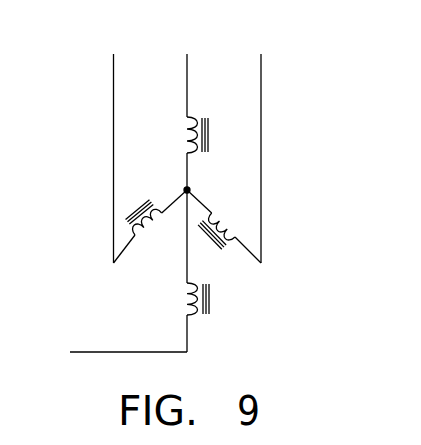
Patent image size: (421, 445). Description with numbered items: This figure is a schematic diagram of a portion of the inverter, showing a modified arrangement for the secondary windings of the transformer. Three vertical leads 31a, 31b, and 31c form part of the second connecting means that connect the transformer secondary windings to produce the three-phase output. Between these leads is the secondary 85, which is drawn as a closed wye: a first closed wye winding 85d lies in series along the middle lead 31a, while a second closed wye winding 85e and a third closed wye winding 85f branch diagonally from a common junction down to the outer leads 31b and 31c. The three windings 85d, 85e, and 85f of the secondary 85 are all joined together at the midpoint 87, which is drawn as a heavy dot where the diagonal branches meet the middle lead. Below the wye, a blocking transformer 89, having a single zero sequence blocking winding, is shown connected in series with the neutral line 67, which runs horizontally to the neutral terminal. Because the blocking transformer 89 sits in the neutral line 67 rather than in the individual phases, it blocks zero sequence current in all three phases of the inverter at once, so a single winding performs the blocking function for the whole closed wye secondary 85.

The lead 31a is at (187, 65).
The lead 31b is at (261, 90).
The lead 31c is at (113, 81).
The secondary 85 is at (155, 191).
The closed wye winding 85d is at (187, 139).
The closed wye winding 85e is at (228, 228).
The closed wye winding 85f is at (151, 226).
The midpoint 87 is at (189, 188).
The blocking transformer 89 is at (187, 304).
The neutral line 67 is at (146, 352).